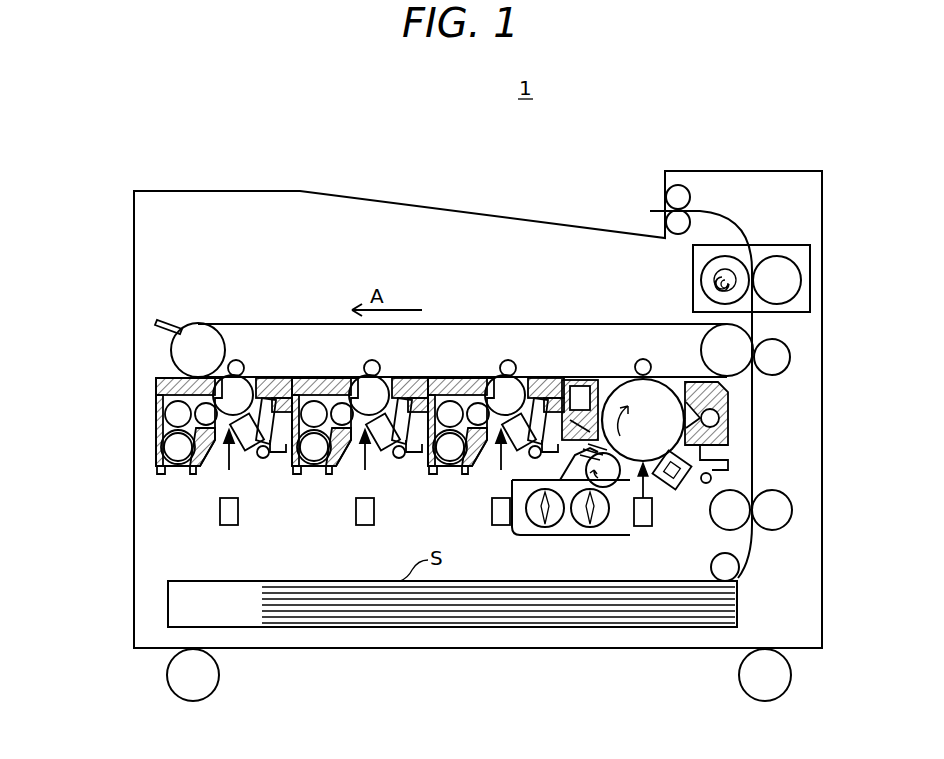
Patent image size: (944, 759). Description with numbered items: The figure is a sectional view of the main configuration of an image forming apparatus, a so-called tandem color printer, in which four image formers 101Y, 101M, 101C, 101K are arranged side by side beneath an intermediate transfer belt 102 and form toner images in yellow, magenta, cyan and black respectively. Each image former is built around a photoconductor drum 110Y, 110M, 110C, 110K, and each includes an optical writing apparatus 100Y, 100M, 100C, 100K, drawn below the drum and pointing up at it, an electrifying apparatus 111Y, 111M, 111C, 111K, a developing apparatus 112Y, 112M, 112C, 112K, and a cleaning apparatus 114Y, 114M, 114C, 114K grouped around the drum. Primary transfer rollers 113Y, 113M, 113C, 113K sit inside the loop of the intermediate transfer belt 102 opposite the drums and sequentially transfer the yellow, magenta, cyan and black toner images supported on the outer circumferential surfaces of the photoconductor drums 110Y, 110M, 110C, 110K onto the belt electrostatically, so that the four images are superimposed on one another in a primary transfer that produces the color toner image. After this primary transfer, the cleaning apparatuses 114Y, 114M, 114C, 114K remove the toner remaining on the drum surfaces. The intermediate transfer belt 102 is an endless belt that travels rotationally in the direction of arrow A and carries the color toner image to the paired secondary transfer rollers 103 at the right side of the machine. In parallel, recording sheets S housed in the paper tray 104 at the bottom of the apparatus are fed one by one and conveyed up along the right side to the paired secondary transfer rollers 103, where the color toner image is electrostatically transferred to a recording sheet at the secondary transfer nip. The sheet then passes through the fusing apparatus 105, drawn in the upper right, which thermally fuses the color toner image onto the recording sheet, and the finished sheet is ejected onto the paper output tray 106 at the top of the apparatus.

The optical writing apparatus 100Y is at (229, 525).
The optical writing apparatus 100M is at (365, 525).
The optical writing apparatus 100C is at (501, 525).
The optical writing apparatus 100K is at (598, 511).
The image former 101Y is at (178, 419).
The image former 101M is at (374, 394).
The image former 101C is at (516, 402).
The image former 101K is at (702, 411).
The intermediate transfer belt 102 is at (216, 330).
The paired secondary transfer rollers 103 is at (773, 358).
The paper tray 104 is at (168, 605).
The fusing apparatus 105 is at (775, 245).
The paper output tray 106 is at (425, 199).
The photoconductor drum 110Y is at (246, 380).
The photoconductor drum 110M is at (383, 380).
The photoconductor drum 110C is at (512, 378).
The photoconductor drum 110K is at (673, 378).
The electrifying apparatus 111Y is at (262, 452).
The electrifying apparatus 111M is at (398, 452).
The electrifying apparatus 111C is at (530, 415).
The electrifying apparatus 111K is at (670, 492).
The developing apparatus 112Y is at (157, 390).
The developing apparatus 112M is at (328, 380).
The developing apparatus 112C is at (452, 380).
The developing apparatus 112K is at (582, 380).
The primary transfer roller 113Y is at (236, 362).
The primary transfer roller 113M is at (365, 364).
The primary transfer roller 113C is at (506, 362).
The primary transfer roller 113K is at (645, 362).
The cleaning apparatus 114Y is at (275, 378).
The cleaning apparatus 114M is at (415, 380).
The cleaning apparatus 114C is at (552, 380).
The cleaning apparatus 114K is at (730, 415).